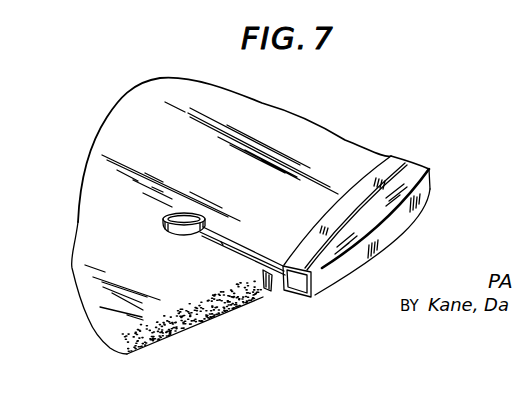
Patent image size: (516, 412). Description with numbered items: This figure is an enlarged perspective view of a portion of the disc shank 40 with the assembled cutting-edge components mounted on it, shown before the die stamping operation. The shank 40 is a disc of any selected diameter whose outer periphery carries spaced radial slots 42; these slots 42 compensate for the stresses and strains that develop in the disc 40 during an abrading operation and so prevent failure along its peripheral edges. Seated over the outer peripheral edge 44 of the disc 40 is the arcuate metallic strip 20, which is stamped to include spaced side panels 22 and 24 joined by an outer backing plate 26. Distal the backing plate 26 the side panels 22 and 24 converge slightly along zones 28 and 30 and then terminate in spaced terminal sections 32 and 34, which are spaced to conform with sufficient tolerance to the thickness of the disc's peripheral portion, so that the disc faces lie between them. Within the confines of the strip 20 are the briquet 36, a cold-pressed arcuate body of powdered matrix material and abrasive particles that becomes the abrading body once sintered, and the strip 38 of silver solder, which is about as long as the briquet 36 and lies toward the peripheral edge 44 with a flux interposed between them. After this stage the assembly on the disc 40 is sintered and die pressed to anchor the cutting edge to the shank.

The metallic strip 20 is at (350, 257).
The side panel 22 is at (291, 292).
The side panel 24 is at (322, 270).
The outer backing plate 26 is at (313, 289).
The converging zone 28 is at (276, 288).
The converging zone 30 is at (287, 267).
The terminal section 32 is at (267, 283).
The terminal section 34 is at (266, 261).
The briquet 36 is at (312, 293).
The strip of silver solder 38 is at (258, 266).
The disc shank 40 is at (118, 132).
The radial slot 42 is at (206, 240).
The outer peripheral edge 44 is at (163, 340).